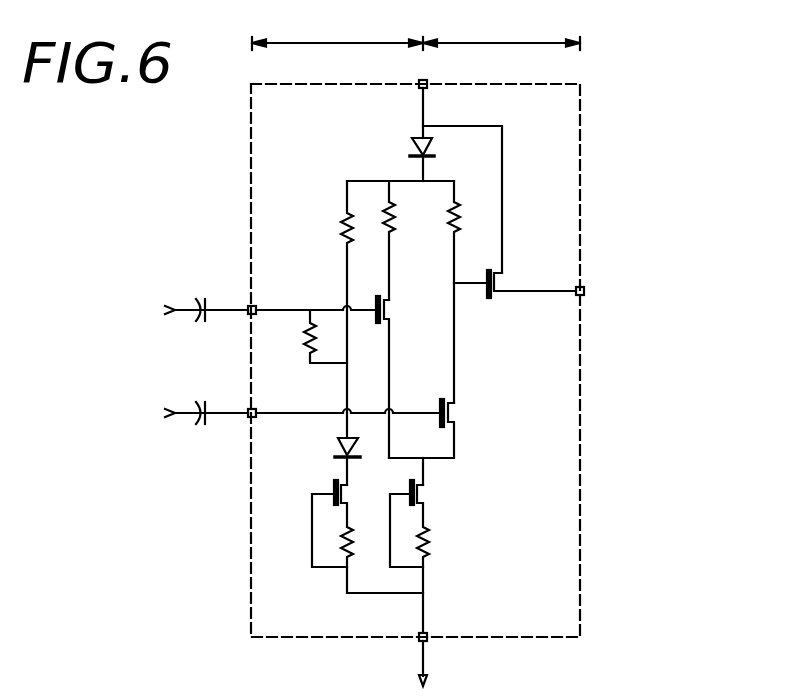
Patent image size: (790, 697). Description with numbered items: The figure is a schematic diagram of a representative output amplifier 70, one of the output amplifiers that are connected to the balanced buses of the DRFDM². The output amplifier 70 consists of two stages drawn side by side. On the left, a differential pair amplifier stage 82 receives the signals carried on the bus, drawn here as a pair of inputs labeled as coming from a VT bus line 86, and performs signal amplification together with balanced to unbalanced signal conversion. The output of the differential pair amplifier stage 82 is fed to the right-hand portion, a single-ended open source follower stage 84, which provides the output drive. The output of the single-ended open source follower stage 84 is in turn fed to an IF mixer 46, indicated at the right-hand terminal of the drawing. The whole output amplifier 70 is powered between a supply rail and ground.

The output amplifier 70 is at (204, 185).
The differential pair amplifier stage 82 is at (337, 33).
The single-ended open source follower stage 84 is at (501, 33).
The VT bus line 86 is at (233, 364).
The IF mixer 46 is at (665, 290).